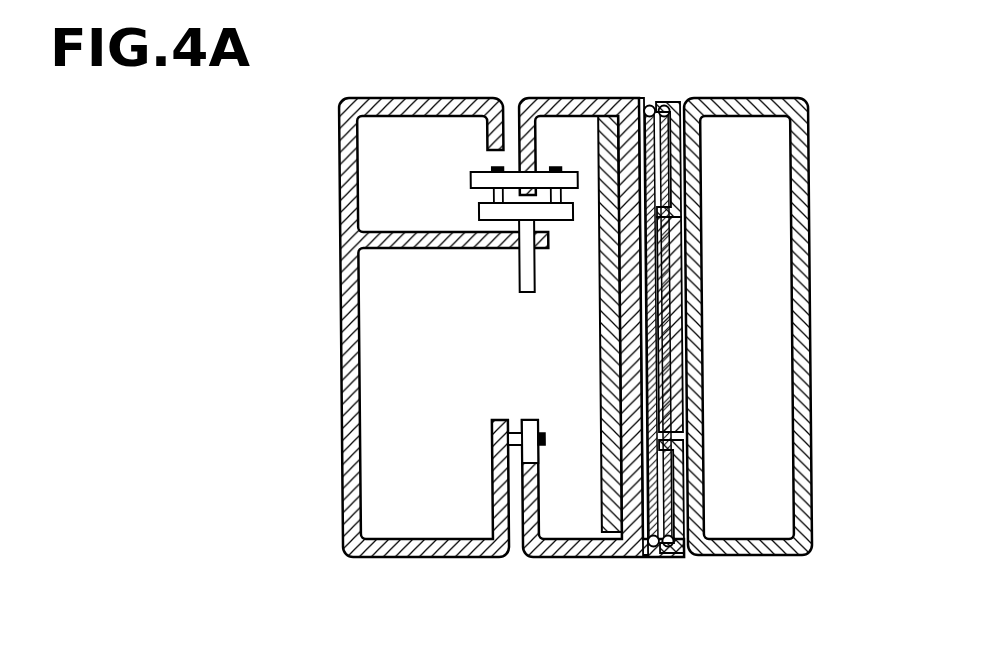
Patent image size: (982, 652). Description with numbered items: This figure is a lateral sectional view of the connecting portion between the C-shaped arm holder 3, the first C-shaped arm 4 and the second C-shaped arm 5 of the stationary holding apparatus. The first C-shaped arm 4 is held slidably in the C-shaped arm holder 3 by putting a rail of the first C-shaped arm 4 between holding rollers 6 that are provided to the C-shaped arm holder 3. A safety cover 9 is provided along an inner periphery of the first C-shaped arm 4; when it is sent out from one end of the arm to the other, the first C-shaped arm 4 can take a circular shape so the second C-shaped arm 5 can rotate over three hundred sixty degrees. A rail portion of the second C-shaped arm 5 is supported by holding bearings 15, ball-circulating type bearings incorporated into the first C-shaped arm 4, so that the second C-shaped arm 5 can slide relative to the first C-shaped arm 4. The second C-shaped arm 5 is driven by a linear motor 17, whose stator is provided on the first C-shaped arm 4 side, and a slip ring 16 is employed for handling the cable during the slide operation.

The C-shaped arm holder 3 is at (347, 440).
The first C-shaped arm 4 is at (586, 97).
The second C-shaped arm 5 is at (745, 97).
The holding rollers 6 is at (470, 180).
The safety cover 9 is at (603, 556).
The holding bearings 15 is at (665, 98).
The slip ring 16 is at (668, 162).
The linear motor 17 is at (667, 352).